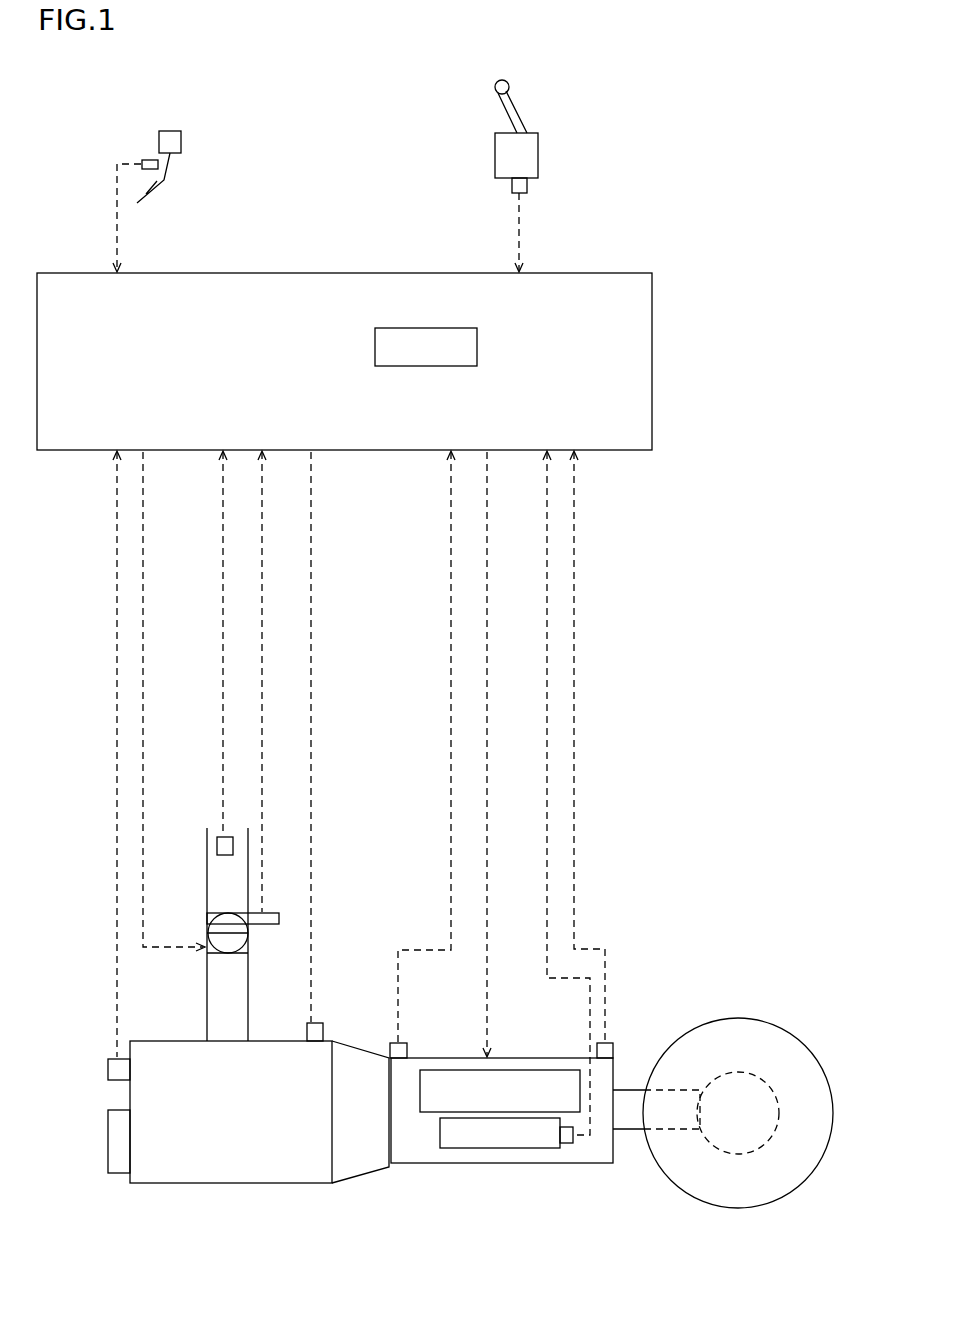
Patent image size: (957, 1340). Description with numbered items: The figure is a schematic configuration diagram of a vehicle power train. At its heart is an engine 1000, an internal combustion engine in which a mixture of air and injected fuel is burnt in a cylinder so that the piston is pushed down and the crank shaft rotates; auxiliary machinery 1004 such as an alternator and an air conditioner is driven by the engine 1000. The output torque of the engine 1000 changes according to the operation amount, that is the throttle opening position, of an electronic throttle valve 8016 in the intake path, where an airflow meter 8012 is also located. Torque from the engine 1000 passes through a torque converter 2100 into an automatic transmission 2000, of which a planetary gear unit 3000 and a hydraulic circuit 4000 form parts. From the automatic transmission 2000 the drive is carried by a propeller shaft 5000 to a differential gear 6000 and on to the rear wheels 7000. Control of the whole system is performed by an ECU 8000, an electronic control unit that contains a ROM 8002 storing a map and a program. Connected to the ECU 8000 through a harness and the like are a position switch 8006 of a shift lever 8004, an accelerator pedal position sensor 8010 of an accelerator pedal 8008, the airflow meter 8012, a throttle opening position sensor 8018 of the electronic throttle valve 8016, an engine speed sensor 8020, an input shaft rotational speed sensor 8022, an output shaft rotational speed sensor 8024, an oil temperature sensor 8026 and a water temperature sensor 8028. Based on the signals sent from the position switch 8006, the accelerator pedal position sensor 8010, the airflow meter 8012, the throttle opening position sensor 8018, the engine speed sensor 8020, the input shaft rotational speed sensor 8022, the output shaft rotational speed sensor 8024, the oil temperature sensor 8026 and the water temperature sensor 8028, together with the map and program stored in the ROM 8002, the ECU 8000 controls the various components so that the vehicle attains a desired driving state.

The engine 1000 is at (232, 1183).
The auxiliary machinery 1004 is at (108, 1145).
The automatic transmission 2000 is at (438, 1165).
The torque converter 2100 is at (360, 1180).
The planetary gear unit 3000 is at (533, 1070).
The hydraulic circuit 4000 is at (473, 1150).
The propeller shaft 5000 is at (632, 1130).
The differential gear 6000 is at (752, 1072).
The rear wheels 7000 is at (742, 1210).
The ECU 8000 is at (95, 272).
The ROM 8002 is at (440, 328).
The shift lever 8004 is at (522, 113).
The position switch 8006 is at (528, 188).
The accelerator pedal 8008 is at (163, 176).
The accelerator pedal position sensor 8010 is at (145, 158).
The airflow meter 8012 is at (218, 835).
The electronic throttle valve 8016 is at (223, 907).
The throttle opening position sensor 8018 is at (258, 927).
The engine speed sensor 8020 is at (108, 1068).
The input shaft rotational speed sensor 8022 is at (407, 1050).
The output shaft rotational speed sensor 8024 is at (613, 1052).
The oil temperature sensor 8026 is at (570, 1150).
The water temperature sensor 8028 is at (325, 1033).